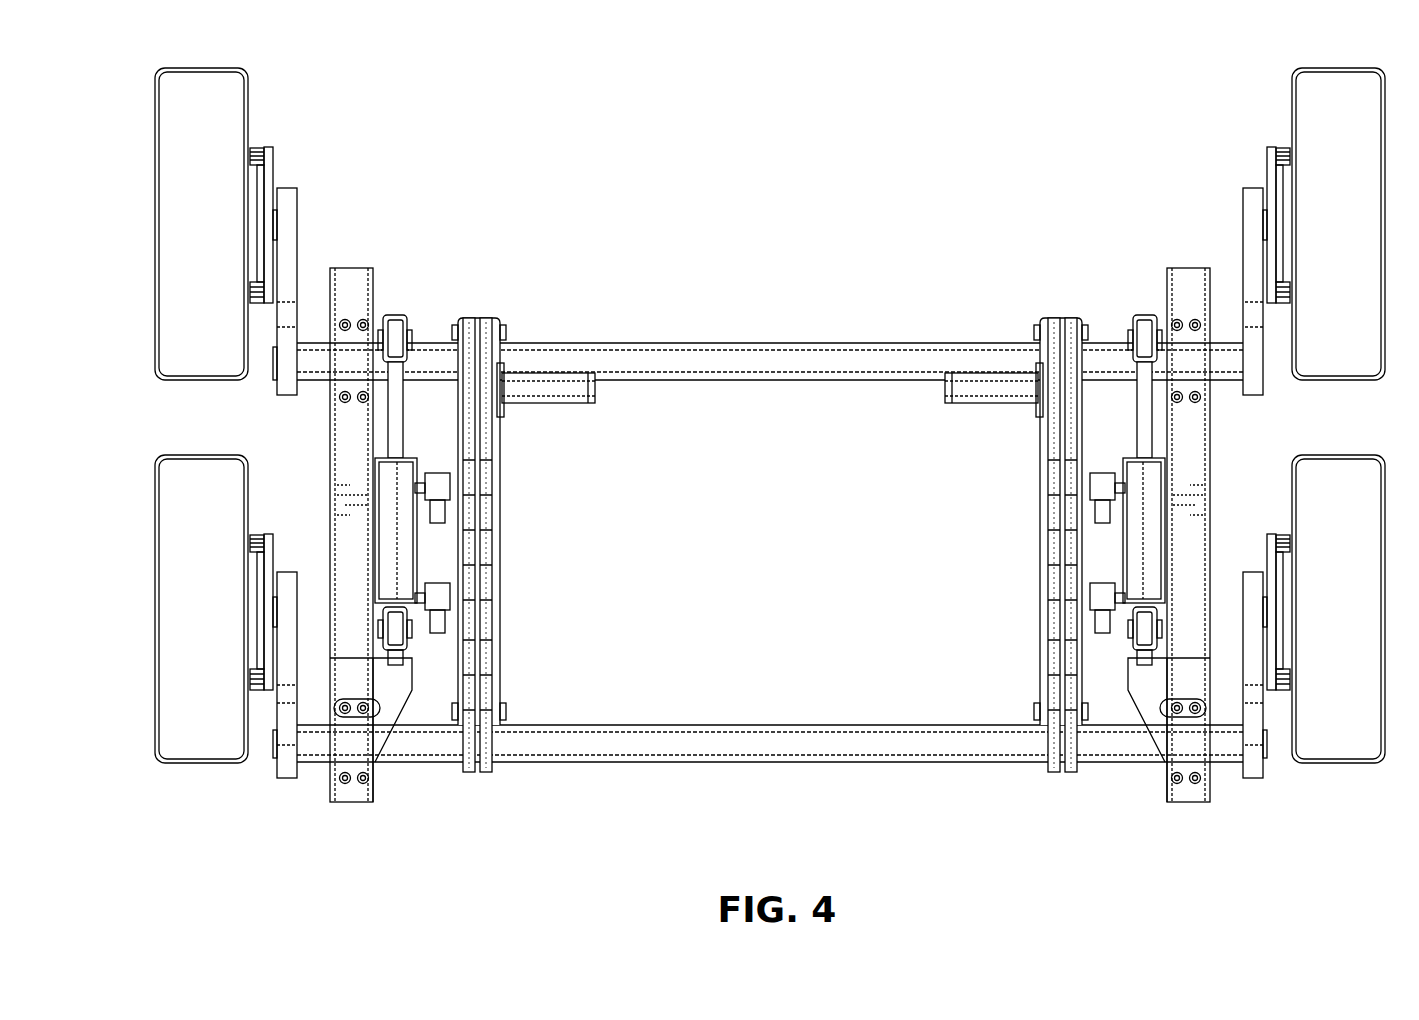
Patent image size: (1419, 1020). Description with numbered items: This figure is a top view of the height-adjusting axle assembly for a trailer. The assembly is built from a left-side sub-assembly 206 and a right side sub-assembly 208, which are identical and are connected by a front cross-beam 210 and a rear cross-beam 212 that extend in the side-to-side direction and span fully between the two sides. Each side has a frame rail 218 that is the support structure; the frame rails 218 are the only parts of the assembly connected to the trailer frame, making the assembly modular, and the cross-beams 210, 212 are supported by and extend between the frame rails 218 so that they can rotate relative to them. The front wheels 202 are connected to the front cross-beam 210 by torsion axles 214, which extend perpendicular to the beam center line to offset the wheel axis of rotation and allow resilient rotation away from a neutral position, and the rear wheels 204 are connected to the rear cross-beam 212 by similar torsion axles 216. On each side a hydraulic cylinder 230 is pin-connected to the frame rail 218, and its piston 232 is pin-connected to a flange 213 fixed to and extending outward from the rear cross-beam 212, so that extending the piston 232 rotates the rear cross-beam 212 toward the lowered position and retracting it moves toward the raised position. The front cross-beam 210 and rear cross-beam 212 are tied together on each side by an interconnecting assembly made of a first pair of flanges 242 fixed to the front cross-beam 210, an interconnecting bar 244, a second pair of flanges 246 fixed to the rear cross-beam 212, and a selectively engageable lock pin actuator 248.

The front wheels 202 is at (190, 460).
The rear wheels 204 is at (205, 73).
The left-side sub-assembly 206 is at (1138, 820).
The right side sub-assembly 208 is at (590, 802).
The front cross-beam 210 is at (857, 762).
The rear cross-beam 212 is at (852, 380).
The flange 213 is at (393, 318).
The torsion axles 214 is at (283, 780).
The torsion axles 216 is at (293, 225).
The frame rail 218 is at (340, 465).
The hydraulic cylinder 230 is at (383, 540).
The piston 232 is at (395, 438).
The first pair of flanges 242 is at (469, 772).
The interconnecting bar 244 is at (497, 570).
The second pair of flanges 246 is at (770, 543).
The lock pin actuator 248 is at (565, 398).